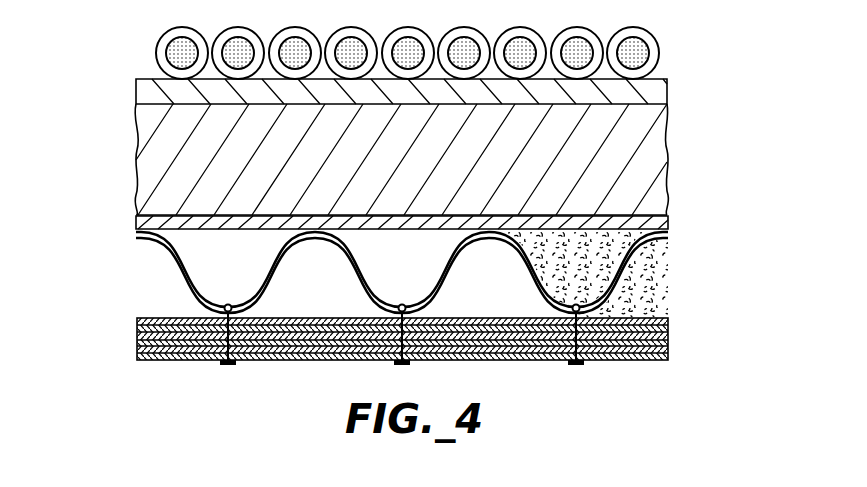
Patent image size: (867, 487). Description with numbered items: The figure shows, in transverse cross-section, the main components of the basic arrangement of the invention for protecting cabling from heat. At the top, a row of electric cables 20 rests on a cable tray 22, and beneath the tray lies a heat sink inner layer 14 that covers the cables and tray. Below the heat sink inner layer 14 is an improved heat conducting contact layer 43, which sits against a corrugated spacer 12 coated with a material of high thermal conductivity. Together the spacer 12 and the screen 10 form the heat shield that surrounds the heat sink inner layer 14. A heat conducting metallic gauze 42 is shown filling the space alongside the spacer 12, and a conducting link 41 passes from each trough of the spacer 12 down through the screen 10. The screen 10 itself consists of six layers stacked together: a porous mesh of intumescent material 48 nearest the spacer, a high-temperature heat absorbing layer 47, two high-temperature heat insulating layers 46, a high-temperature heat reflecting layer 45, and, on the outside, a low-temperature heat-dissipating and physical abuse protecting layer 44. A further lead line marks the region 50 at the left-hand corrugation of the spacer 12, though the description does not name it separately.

The screen 10 is at (410, 327).
The spacer 12 is at (448, 277).
The heat sink inner layer 14 is at (668, 156).
The electric cables 20 is at (659, 50).
The cable tray 22 is at (668, 86).
The conducting link 41 is at (577, 365).
The heat conducting metallic gauze 42 is at (668, 236).
The improved heat conducting contact layer 43 is at (668, 222).
The low-temperature heat-dissipating/physical abuse protecting layer 44 is at (670, 358).
The high-temperature heat reflecting layer 45 is at (670, 350).
The high-temperature heat insulating layers 46 is at (670, 333).
The high-temperature heat absorbing layer 47 is at (670, 327).
The porous mesh of intumescent material 48 is at (670, 320).
The air space 50 is at (173, 267).